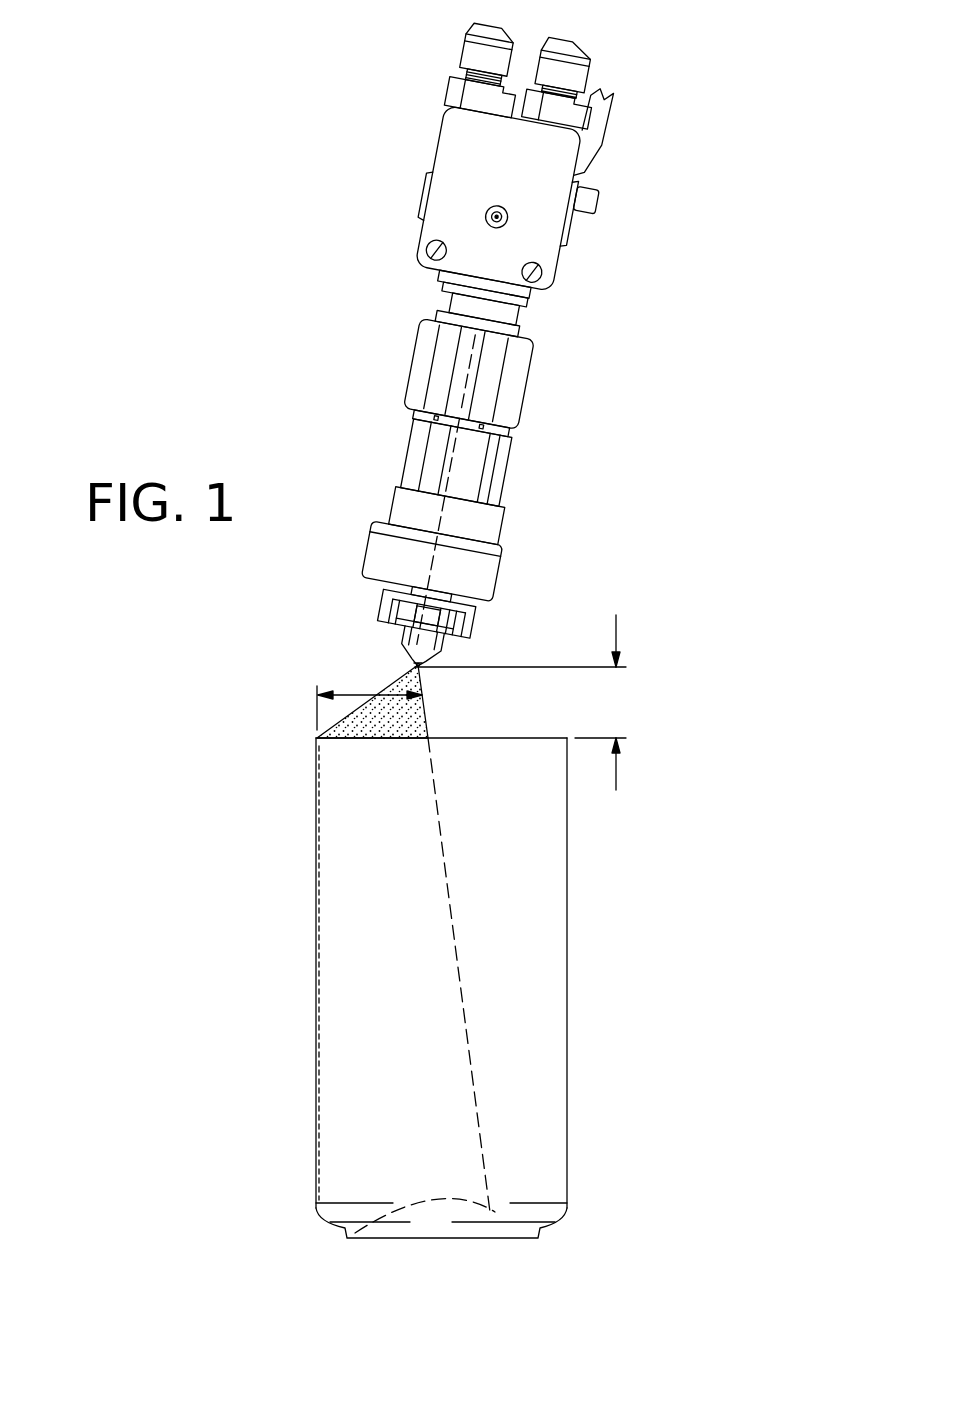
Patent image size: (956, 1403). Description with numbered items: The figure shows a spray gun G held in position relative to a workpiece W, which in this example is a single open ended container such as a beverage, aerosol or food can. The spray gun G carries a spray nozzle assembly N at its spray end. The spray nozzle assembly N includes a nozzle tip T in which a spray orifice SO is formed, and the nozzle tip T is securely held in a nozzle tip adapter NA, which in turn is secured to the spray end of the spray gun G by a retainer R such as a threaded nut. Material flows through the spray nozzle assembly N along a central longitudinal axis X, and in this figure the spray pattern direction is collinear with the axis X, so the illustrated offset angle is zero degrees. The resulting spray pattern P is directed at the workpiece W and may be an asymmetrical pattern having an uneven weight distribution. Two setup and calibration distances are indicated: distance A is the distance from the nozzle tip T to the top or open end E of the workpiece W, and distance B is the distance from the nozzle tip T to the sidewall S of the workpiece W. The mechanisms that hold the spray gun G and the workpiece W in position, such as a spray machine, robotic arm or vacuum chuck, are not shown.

The spray gun G is at (434, 345).
The central longitudinal axis X is at (472, 368).
The spray nozzle assembly N is at (384, 595).
The retainer R is at (470, 622).
The nozzle tip adapter NA is at (440, 655).
The nozzle tip T is at (405, 667).
The spray orifice SO is at (421, 668).
The spray pattern P is at (404, 738).
The workpiece W is at (357, 964).
The sidewall S is at (315, 762).
The open end E is at (510, 738).
The distance A is at (520, 702).
The distance B is at (317, 695).